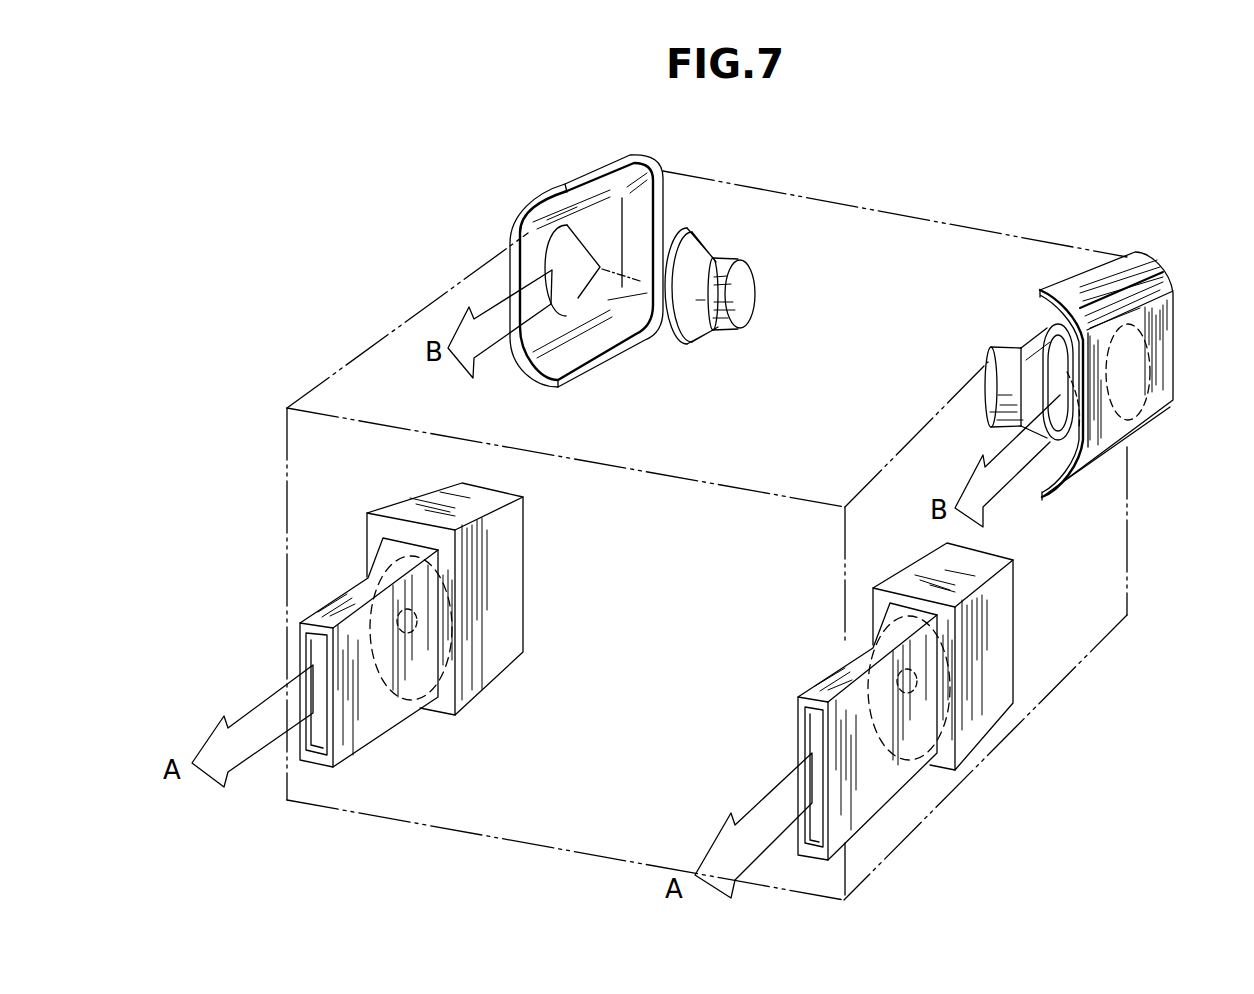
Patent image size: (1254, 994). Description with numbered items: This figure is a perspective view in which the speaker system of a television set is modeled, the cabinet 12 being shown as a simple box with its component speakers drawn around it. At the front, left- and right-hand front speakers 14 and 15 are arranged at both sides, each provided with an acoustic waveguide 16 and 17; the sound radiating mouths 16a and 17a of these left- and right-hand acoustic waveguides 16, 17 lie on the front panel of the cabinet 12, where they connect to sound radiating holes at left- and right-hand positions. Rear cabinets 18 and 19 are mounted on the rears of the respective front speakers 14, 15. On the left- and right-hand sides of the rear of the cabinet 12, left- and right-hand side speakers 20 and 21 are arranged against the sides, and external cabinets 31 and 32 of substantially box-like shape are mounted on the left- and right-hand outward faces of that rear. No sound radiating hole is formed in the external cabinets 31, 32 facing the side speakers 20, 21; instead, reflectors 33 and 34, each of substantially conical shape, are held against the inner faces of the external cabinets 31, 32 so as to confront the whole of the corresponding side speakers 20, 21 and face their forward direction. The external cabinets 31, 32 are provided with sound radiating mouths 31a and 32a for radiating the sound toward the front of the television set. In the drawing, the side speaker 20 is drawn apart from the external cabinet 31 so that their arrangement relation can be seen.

The cabinet 12 is at (325, 376).
The left-hand front speaker 14 is at (407, 688).
The right-hand front speaker 15 is at (907, 750).
The left-hand acoustic waveguide 16 is at (357, 740).
The sound radiating mouth 16a is at (317, 752).
The right-hand acoustic waveguide 17 is at (860, 813).
The sound radiating mouth 17a is at (817, 847).
The rear cabinet 18 is at (492, 667).
The rear cabinet 19 is at (990, 717).
The left-hand side speaker 20 is at (710, 244).
The right-hand side speaker 21 is at (1030, 352).
The external cabinet 31 is at (591, 172).
The sound radiating mouth 31a is at (532, 247).
The external cabinet 32 is at (1163, 303).
The sound radiating mouth 32a is at (1052, 466).
The reflector 33 is at (578, 298).
The reflector 34 is at (1102, 413).